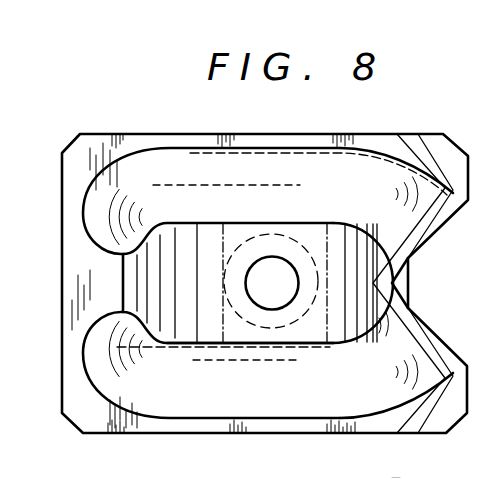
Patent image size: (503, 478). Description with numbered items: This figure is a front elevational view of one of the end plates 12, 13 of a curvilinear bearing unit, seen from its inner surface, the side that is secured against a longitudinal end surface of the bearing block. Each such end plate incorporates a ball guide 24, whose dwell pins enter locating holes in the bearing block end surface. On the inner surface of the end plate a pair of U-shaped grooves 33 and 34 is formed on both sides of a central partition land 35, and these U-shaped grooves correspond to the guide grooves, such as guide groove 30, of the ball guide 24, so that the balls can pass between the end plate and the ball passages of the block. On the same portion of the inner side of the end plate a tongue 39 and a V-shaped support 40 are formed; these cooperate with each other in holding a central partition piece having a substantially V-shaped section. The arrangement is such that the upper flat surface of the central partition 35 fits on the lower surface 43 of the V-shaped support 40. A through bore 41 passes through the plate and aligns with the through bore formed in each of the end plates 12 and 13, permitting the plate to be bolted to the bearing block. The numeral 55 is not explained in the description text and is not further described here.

The front end plate 12 is at (265, 259).
The rear end plate 13 is at (147, 134).
The ball guide 24 is at (392, 477).
The guide groove 30 is at (328, 467).
The U-shaped groove 33 is at (261, 157).
The U-shaped groove 34 is at (272, 409).
The central partition land 35 is at (338, 331).
The tongue 39 is at (403, 281).
The V-shaped support 40 is at (382, 247).
The through bore 41 is at (277, 304).
The lower surface of V-shaped support 43 is at (386, 319).
The support 55 is at (198, 473).